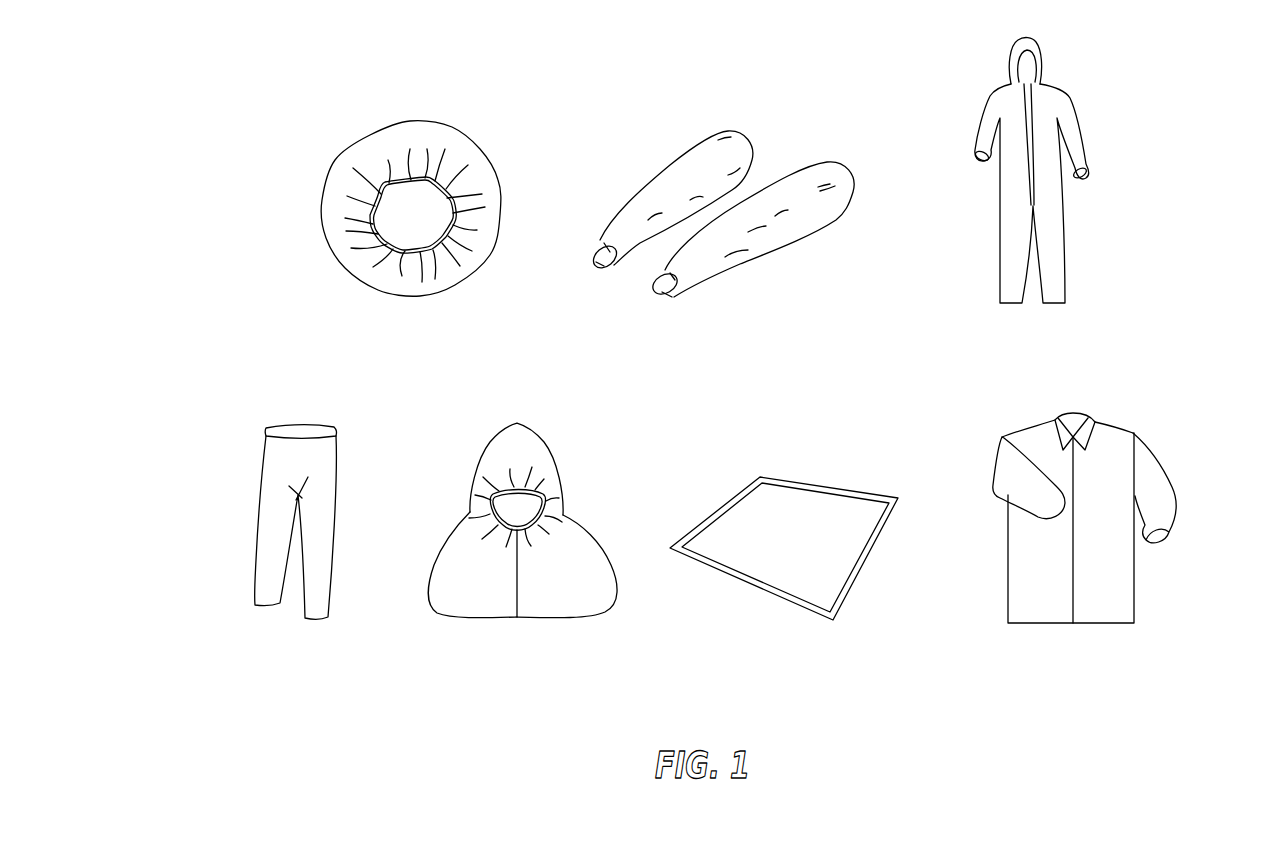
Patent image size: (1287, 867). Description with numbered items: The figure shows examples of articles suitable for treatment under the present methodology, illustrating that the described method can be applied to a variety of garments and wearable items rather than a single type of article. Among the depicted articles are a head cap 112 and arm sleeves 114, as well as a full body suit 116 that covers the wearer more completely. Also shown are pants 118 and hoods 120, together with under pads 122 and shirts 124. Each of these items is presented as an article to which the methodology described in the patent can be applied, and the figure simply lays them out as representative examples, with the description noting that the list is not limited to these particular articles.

The head cap 112 is at (325, 210).
The arm sleeves 114 is at (768, 240).
The full body suit 116 is at (1010, 232).
The pants 118 is at (278, 527).
The hoods 120 is at (565, 600).
The under pads 122 is at (853, 571).
The shirts 124 is at (1118, 590).